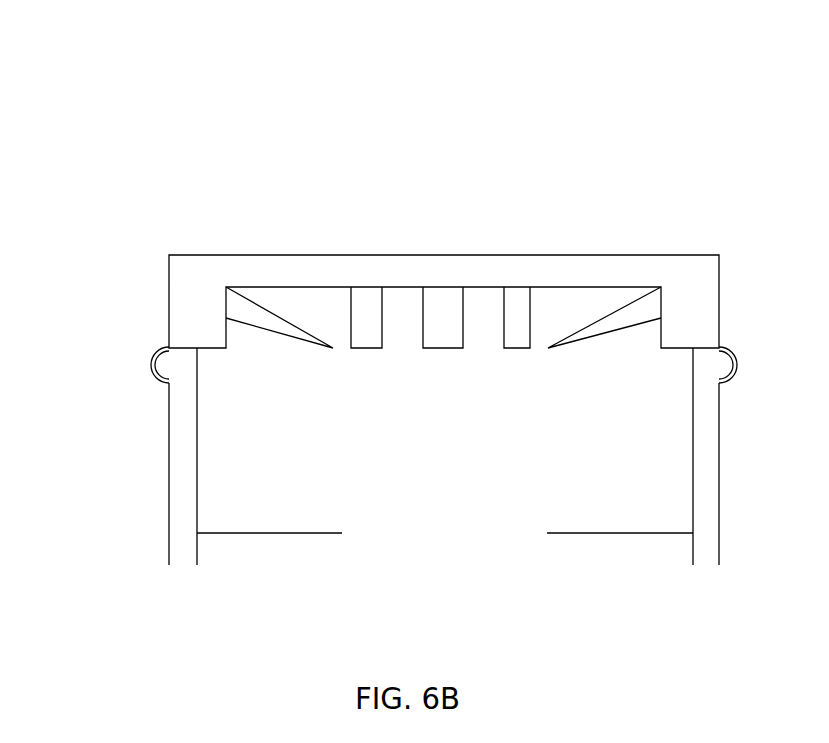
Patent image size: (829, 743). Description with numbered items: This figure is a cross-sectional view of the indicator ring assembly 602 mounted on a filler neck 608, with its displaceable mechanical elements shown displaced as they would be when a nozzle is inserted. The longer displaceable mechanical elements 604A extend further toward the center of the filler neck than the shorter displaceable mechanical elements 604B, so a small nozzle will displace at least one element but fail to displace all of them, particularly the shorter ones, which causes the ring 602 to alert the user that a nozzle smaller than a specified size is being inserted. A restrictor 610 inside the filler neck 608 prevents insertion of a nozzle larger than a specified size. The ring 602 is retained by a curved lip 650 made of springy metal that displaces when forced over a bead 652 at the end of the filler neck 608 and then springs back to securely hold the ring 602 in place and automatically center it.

The ring assembly 602 is at (672, 80).
The displaceable mechanical elements 604A is at (466, 308).
The displaceable mechanical elements 604B is at (531, 300).
The filler neck 608 is at (719, 420).
The restrictor 610 is at (561, 535).
The curved lip 650 is at (152, 348).
The bead 652 is at (160, 374).